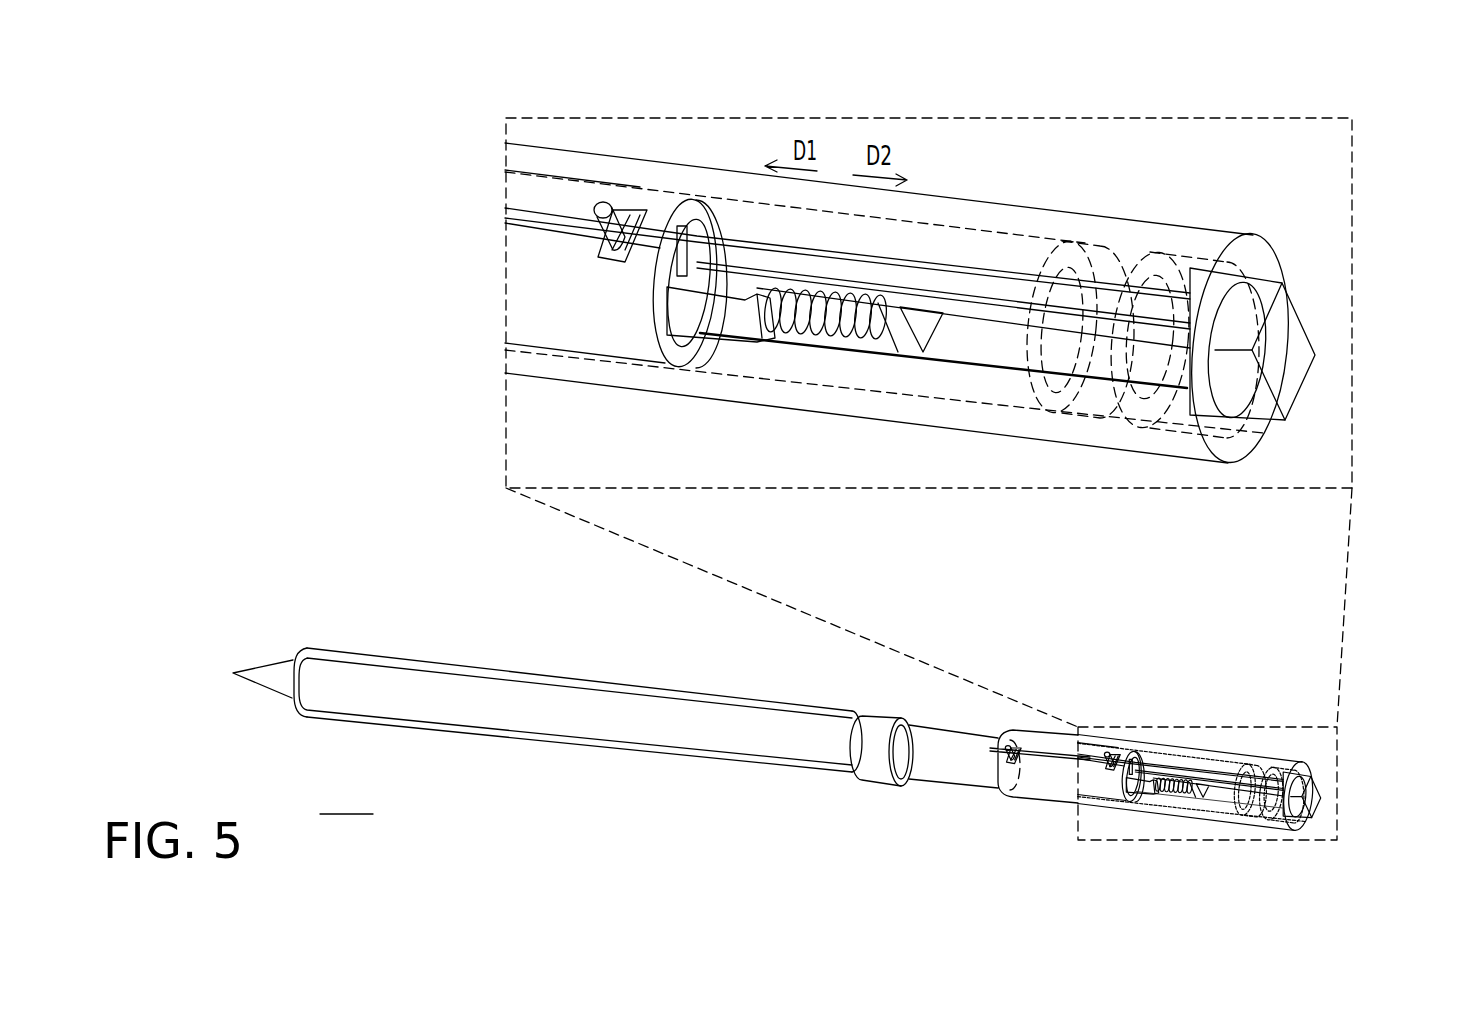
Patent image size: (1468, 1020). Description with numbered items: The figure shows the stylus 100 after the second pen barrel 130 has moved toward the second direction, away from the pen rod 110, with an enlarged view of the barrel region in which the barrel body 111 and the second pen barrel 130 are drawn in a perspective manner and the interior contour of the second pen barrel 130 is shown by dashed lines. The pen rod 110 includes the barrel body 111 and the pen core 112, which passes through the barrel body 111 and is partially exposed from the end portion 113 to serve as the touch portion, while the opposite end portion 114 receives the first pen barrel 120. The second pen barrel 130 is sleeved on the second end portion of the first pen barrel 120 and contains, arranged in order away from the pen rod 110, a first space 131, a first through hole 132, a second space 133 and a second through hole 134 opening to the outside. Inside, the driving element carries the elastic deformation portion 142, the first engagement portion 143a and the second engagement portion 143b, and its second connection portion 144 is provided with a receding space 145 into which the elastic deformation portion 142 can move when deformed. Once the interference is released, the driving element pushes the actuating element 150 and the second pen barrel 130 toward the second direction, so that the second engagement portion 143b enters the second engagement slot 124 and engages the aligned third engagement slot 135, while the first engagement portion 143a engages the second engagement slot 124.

The stylus 100 is at (346, 795).
The pen rod 110 is at (585, 649).
The barrel body 111 is at (490, 673).
The pen core 112 is at (410, 685).
The end portion 113 is at (332, 715).
The end portion 114 is at (878, 780).
The first pen barrel 120 is at (977, 747).
The second engagement slot 124 is at (633, 202).
The second pen barrel 130 is at (1293, 762).
The first space 131 is at (1010, 232).
The first through hole 132 is at (1110, 268).
The second space 133 is at (1180, 252).
The second through hole 134 is at (1282, 285).
The third engagement slot 135 is at (594, 208).
The elastic deformation portion 142 is at (687, 200).
The first engagement portion 143a is at (612, 260).
The second engagement portion 143b is at (600, 252).
The second connection portion 144 is at (683, 303).
The receding space 145 is at (745, 286).
The actuating element 150 is at (1330, 413).